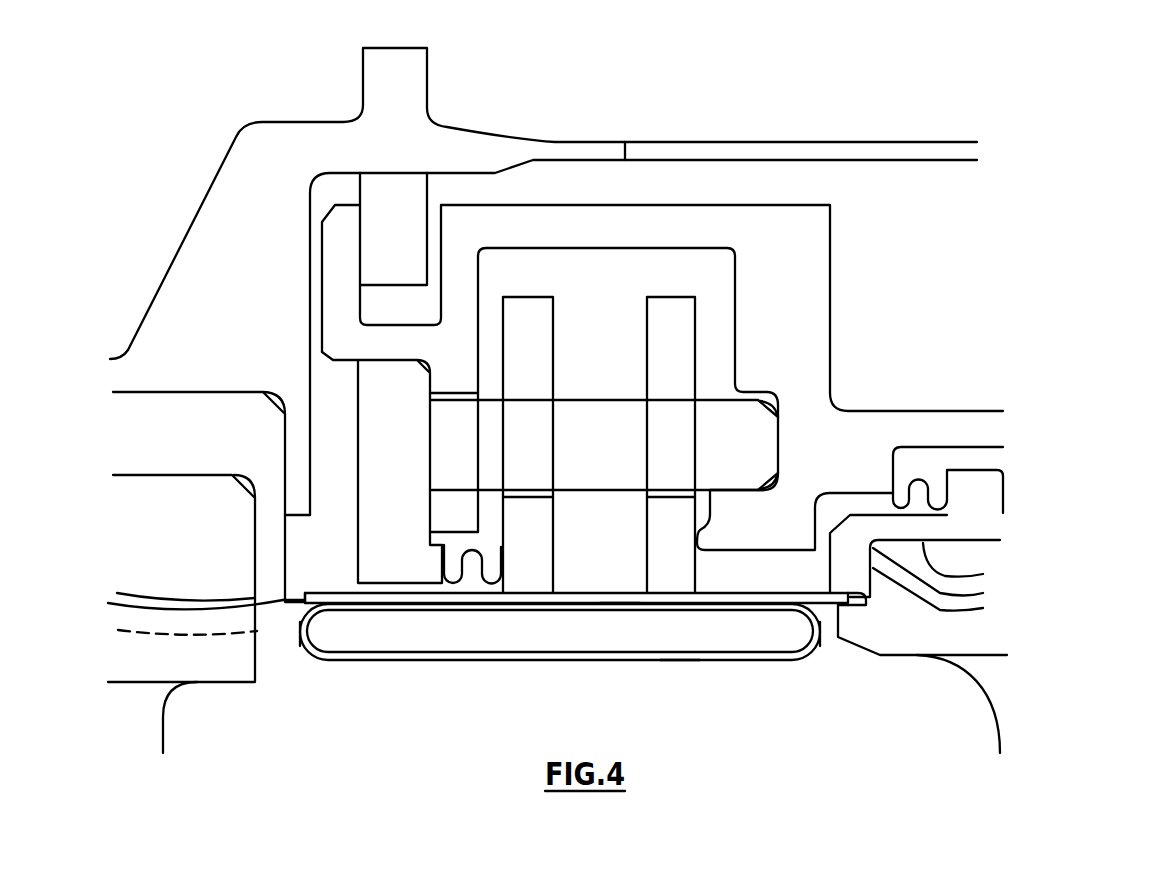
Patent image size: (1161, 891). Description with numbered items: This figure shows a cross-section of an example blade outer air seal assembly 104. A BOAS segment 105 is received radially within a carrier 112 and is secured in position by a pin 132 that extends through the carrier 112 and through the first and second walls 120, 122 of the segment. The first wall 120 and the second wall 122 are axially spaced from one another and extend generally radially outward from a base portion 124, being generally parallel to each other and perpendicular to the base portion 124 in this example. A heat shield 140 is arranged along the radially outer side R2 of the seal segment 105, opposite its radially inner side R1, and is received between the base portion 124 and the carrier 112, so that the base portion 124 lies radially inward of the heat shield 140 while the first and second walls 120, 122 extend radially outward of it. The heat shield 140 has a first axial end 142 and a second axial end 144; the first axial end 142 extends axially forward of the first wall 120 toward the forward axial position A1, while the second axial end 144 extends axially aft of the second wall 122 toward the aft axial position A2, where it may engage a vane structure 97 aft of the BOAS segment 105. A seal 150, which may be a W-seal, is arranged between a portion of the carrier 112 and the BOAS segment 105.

The blade outer air seal assembly 104 is at (932, 100).
The carrier 112 is at (803, 320).
The first wall 120 is at (527, 302).
The second wall 122 is at (660, 302).
The pin 132 is at (577, 425).
The heat shield 140 is at (332, 597).
The first axial end 142 is at (306, 594).
The second axial end 144 is at (853, 600).
The seal 150 is at (467, 582).
The base portion 124 is at (602, 633).
The BOAS segment 105 is at (770, 633).
The turbine vane 97 is at (937, 640).
The first radius R1 is at (670, 662).
The radially outer side R2 is at (615, 604).
The first axial position A1 is at (301, 637).
The second axial position A2 is at (818, 633).